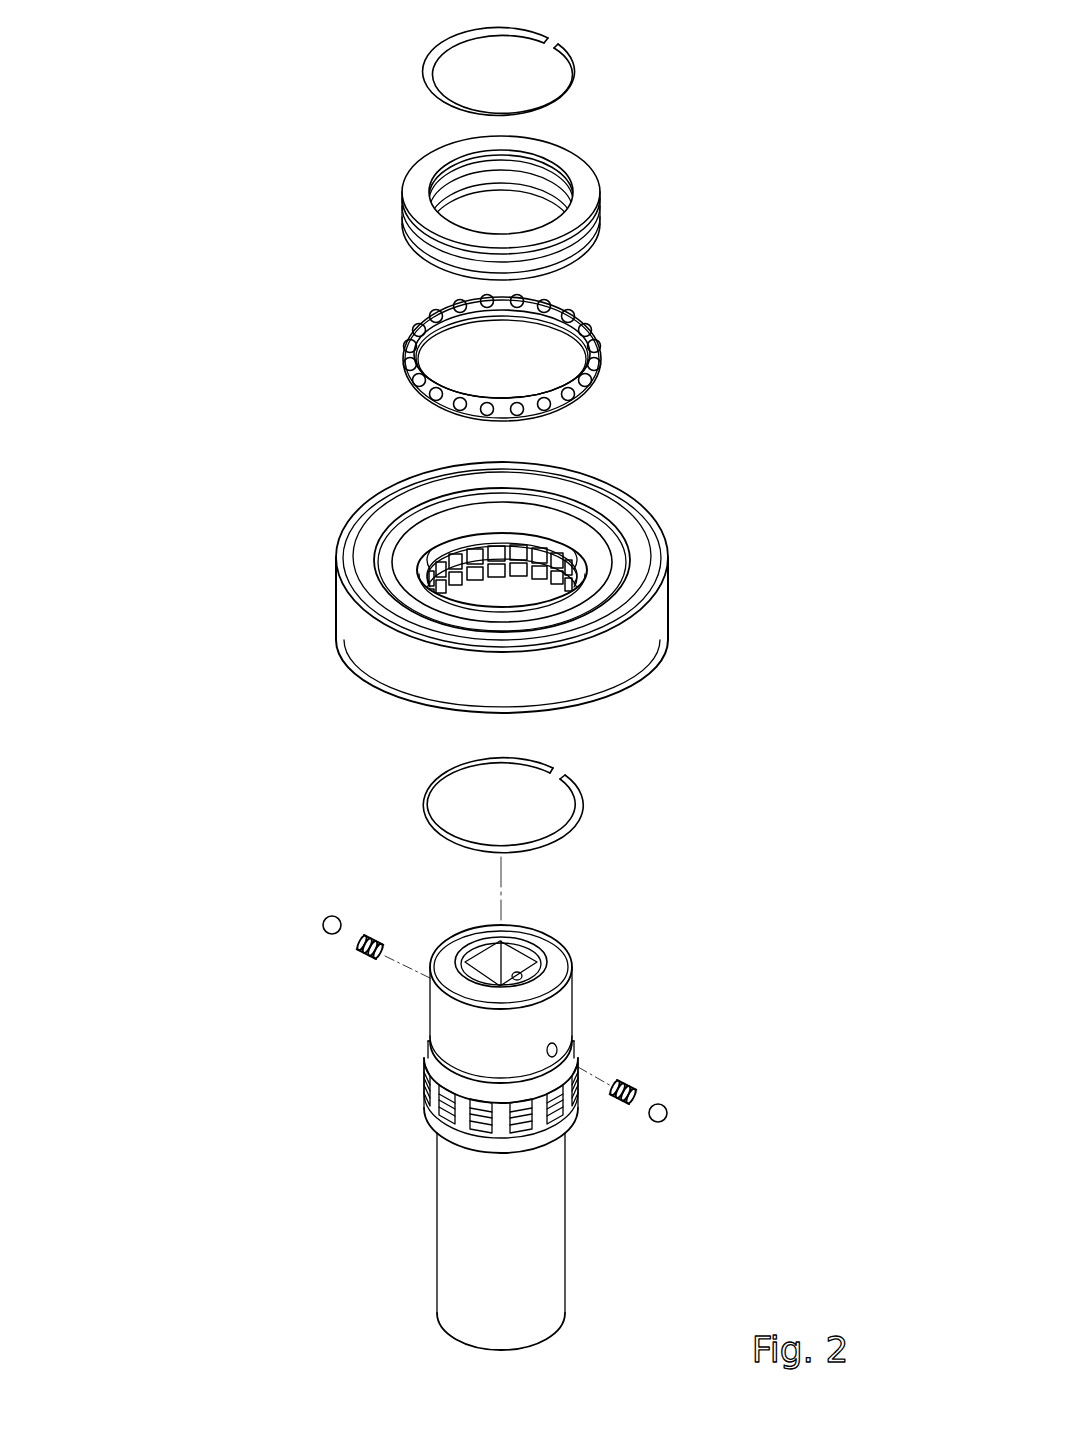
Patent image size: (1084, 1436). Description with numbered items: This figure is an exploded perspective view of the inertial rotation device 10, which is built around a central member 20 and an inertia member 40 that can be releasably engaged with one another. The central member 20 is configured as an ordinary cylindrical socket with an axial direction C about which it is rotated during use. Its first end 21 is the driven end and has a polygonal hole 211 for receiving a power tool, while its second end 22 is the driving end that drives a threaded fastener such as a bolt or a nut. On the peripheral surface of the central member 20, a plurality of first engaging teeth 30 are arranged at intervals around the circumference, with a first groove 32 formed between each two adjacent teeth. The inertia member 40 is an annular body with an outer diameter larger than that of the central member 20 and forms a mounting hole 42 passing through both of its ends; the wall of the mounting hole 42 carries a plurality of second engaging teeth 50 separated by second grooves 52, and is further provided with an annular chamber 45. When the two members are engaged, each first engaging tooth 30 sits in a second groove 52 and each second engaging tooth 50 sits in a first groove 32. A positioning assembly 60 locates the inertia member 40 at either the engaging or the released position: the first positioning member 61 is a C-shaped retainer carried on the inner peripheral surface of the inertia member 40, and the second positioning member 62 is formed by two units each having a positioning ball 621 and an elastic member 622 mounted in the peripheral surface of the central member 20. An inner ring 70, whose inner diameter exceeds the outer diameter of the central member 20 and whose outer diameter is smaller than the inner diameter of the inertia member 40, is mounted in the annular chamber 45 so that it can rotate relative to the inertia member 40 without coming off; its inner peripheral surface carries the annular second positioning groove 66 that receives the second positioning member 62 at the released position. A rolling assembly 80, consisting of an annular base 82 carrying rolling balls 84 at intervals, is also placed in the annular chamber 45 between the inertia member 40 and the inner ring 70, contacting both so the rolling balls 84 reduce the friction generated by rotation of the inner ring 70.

The inertial rotation device 10 is at (268, 113).
The central member 20 is at (640, 1017).
The first end 21 is at (575, 977).
The polygonal hole 211 is at (483, 952).
The second end 22 is at (575, 1297).
The first engaging teeth 30 is at (427, 1105).
The first groove 32 is at (467, 1127).
The inertia member 40 is at (680, 575).
The mounting hole 42 is at (492, 592).
The annular chamber 45 is at (461, 522).
The second engaging teeth 50 is at (460, 543).
The second groove 52 is at (560, 512).
The positioning assembly 60 is at (350, 812).
The first positioning member 61 is at (572, 790).
The second positioning member 62 is at (655, 1090).
The positioning ball 621 is at (323, 926).
The elastic member 622 is at (362, 957).
The second positioning groove 66 is at (448, 186).
The inner ring 70 is at (573, 148).
The rolling assembly 80 is at (600, 330).
The annular base 82 is at (578, 402).
The rolling balls 84 is at (570, 308).
The axial direction C is at (501, 890).